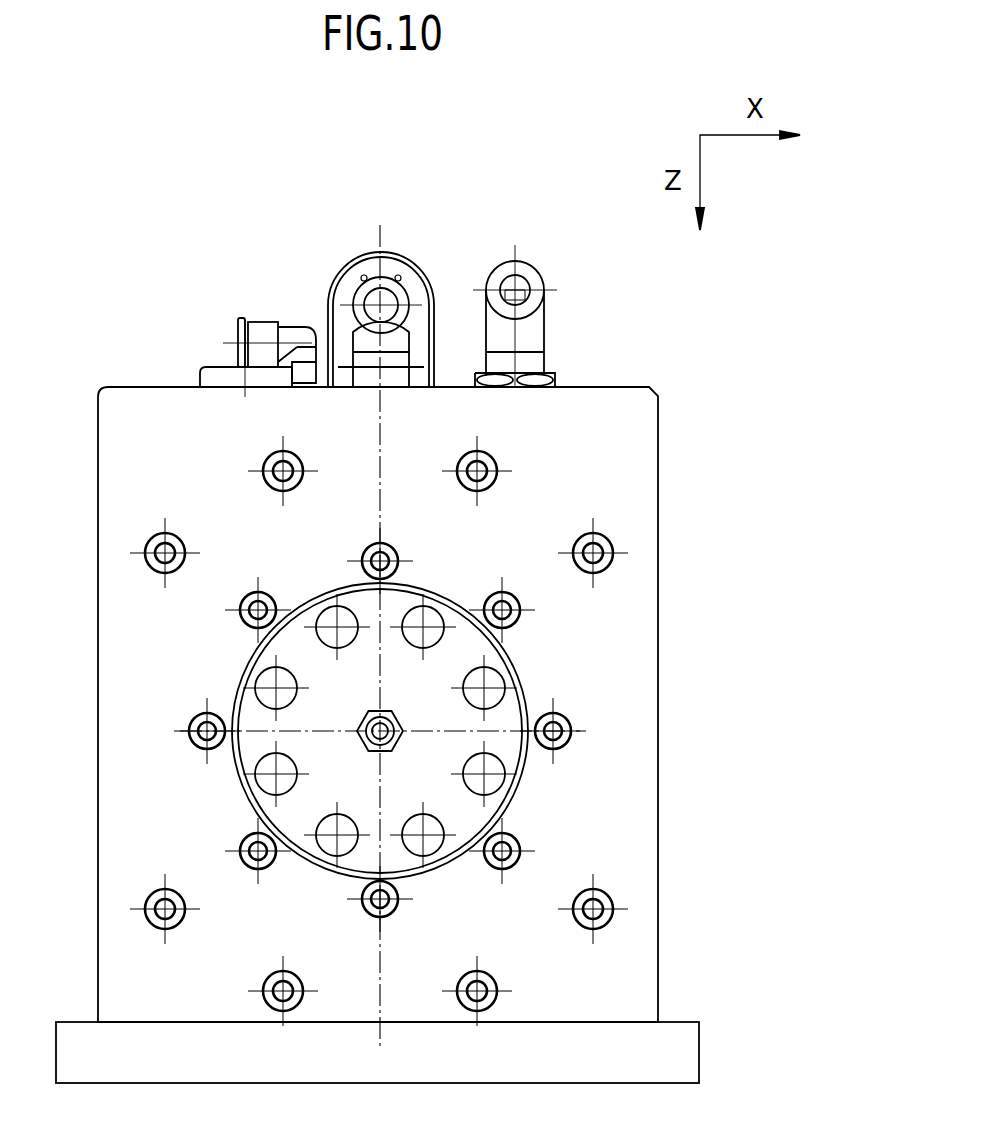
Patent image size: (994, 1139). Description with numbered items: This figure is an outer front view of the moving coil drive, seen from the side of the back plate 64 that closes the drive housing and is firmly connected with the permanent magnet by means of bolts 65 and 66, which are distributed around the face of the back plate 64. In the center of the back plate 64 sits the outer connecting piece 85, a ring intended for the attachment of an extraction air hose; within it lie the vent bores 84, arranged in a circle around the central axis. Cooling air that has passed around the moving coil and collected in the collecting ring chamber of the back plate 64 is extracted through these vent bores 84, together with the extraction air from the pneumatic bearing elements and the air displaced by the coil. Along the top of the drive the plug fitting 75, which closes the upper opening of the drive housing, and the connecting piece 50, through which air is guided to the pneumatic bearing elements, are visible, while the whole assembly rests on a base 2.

The base plate 2 is at (680, 1058).
The connecting piece 50 is at (292, 333).
The back plate 64 is at (640, 488).
The bolts 65 is at (170, 533).
The bolts 66 is at (363, 553).
The plug fitting 75 is at (403, 253).
The vent bores 84 is at (283, 680).
The outer connecting piece 85 is at (508, 800).